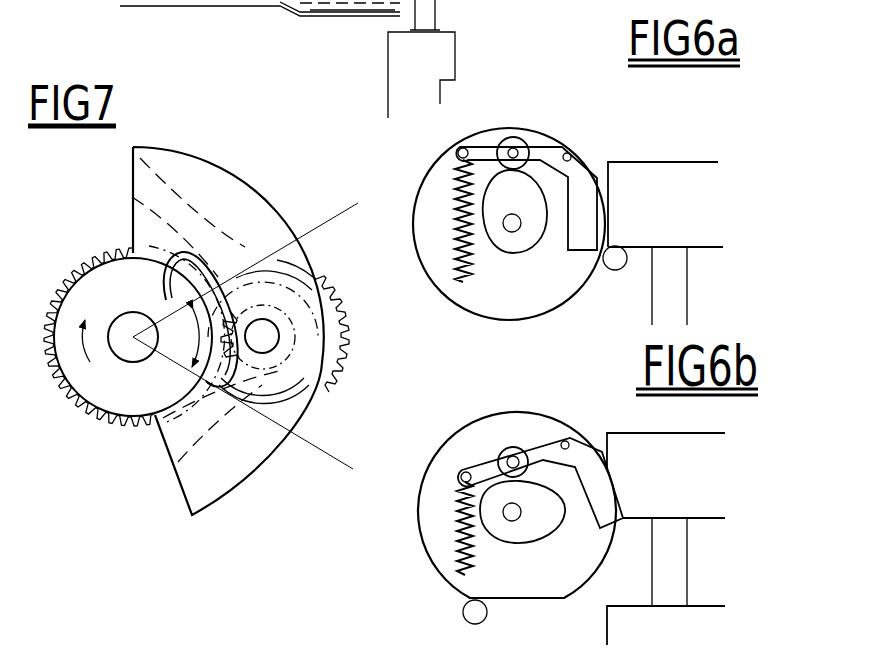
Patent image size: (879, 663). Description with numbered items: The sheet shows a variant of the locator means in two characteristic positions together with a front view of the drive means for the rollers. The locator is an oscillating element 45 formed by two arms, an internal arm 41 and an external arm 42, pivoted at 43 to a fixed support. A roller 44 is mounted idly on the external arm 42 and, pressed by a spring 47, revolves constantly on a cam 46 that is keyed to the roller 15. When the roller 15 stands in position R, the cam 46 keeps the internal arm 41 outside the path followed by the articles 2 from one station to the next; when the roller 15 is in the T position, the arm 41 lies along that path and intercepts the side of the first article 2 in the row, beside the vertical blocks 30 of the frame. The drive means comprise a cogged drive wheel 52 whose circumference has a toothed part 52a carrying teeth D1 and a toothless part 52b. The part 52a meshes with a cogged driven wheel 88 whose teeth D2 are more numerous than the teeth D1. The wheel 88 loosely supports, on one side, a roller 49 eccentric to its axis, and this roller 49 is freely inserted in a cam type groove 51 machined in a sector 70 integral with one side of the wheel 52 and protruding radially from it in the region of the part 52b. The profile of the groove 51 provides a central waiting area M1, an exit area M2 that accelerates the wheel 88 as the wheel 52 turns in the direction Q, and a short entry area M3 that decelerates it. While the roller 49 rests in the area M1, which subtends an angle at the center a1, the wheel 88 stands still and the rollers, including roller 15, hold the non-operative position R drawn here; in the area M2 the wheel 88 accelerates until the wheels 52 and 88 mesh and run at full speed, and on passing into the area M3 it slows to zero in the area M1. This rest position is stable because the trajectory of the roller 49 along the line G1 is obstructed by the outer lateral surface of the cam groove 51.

In FIG. 6A, the articles 2 is at (665, 204).
In FIG. 6B, the articles 2 is at (666, 539).
In FIG. 6A, the roller 15 is at (432, 160).
In FIG. 6B, the roller 15 is at (414, 515).
In FIG. 6A, the vertical blocks 30 is at (662, 312).
In FIG. 6B, the vertical blocks 30 is at (680, 553).
In FIG. 6A, the internal arm 41 is at (582, 205).
In FIG. 6A, the external arm 42 is at (531, 140).
In FIG. 6B, the pivot 43 is at (570, 440).
In FIG. 6B, the roller 44 is at (508, 449).
In FIG. 6A, the oscillating element 45 is at (556, 230).
In FIG. 6B, the cam 46 is at (533, 520).
In FIG. 6A, the spring 47 is at (455, 200).
In FIG. 6B, the spring 47 is at (460, 537).
In FIG. 7, the roller 49 is at (270, 334).
In FIG. 7, the cam type groove 51 is at (165, 190).
In FIG. 7, the cogged drive wheel 52 is at (130, 301).
In FIG. 7, the toothed part 52a is at (108, 249).
In FIG. 7, the toothless part 52b is at (185, 412).
In FIG. 7, the sector 70 is at (247, 470).
In FIG. 7, the cogged driven wheel 88 is at (340, 372).
In FIG. 6A, the non-operative position R is at (566, 130).
In FIG. 6B, the operative position T is at (545, 413).
In FIG. 7, the teeth of the drive wheel D1 is at (84, 402).
In FIG. 7, the teeth of the driven wheel D2 is at (330, 382).
In FIG. 7, the central waiting area M1 is at (283, 343).
In FIG. 7, the exit area M2 is at (200, 165).
In FIG. 7, the entry area M3 is at (211, 452).
In FIG. 7, the line of roller trajectory G1 is at (283, 302).
In FIG. 7, the direction of rotation Q is at (101, 360).
In FIG. 7, the angle at the center a1 is at (184, 338).